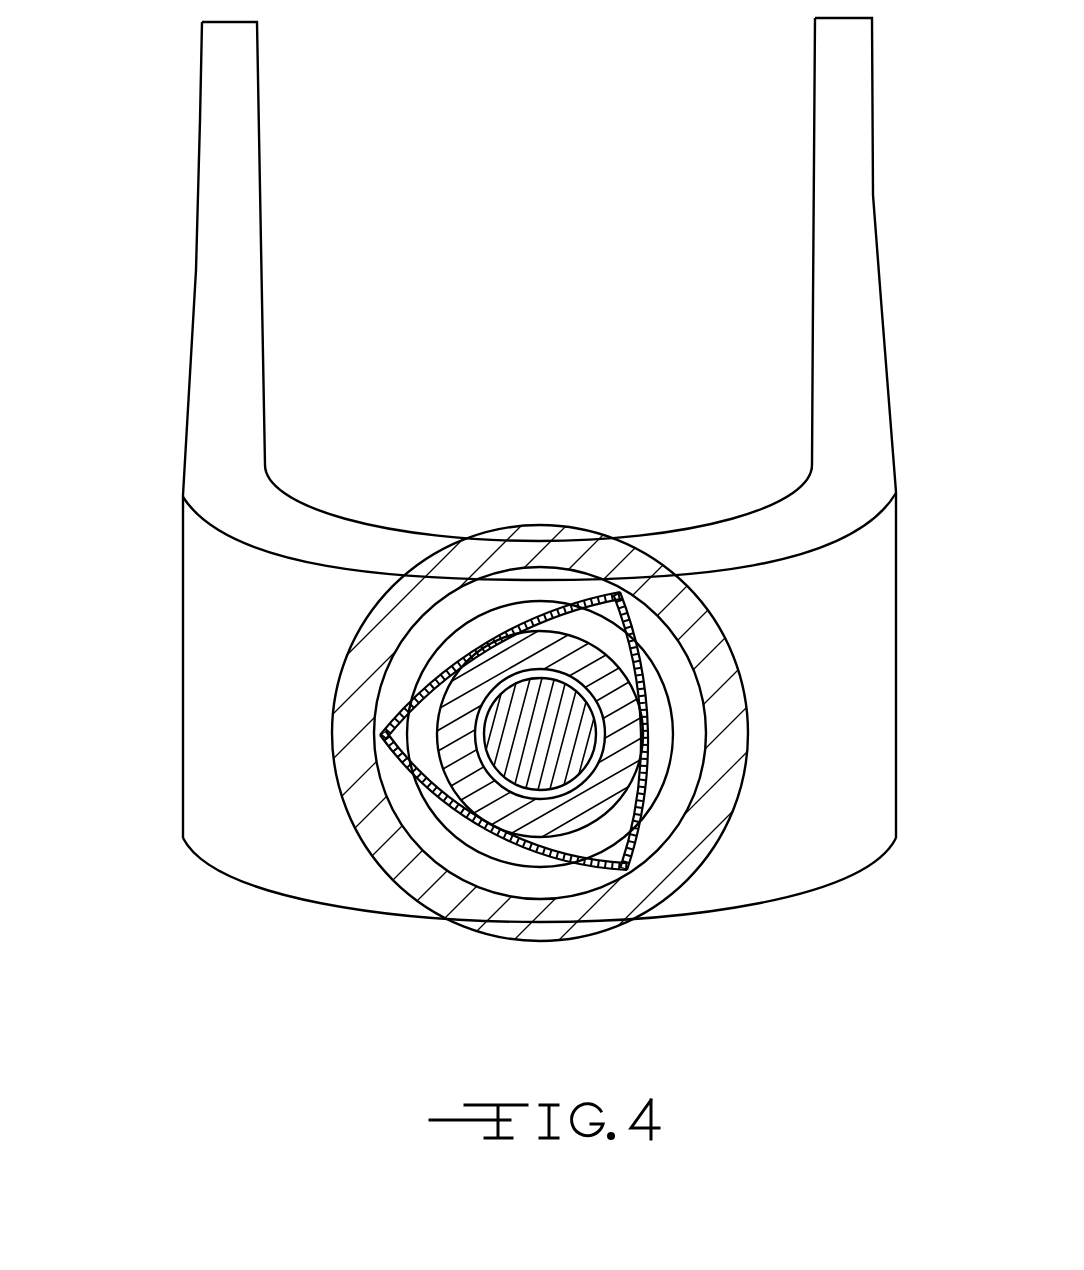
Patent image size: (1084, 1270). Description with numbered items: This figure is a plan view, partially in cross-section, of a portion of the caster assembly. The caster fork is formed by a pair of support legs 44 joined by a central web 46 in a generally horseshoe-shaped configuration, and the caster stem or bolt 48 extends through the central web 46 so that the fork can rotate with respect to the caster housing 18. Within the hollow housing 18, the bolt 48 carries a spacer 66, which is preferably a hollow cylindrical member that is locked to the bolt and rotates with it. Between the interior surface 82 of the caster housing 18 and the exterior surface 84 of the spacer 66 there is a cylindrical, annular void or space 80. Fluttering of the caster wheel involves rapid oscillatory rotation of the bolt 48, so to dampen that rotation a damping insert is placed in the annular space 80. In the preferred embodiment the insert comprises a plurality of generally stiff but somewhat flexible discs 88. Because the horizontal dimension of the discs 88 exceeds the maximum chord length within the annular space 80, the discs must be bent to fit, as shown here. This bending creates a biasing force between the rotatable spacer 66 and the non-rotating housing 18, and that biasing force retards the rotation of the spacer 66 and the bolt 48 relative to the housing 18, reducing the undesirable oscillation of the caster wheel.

The support legs 44 is at (262, 210).
The central web 46 is at (183, 813).
The caster housing 18 is at (508, 940).
The annular space 80 is at (467, 868).
The interior surface 82 is at (690, 640).
The exterior surface 84 is at (375, 695).
The caster stem or bolt 48 is at (620, 795).
The spacer 66 is at (597, 822).
The discs 88 is at (528, 605).